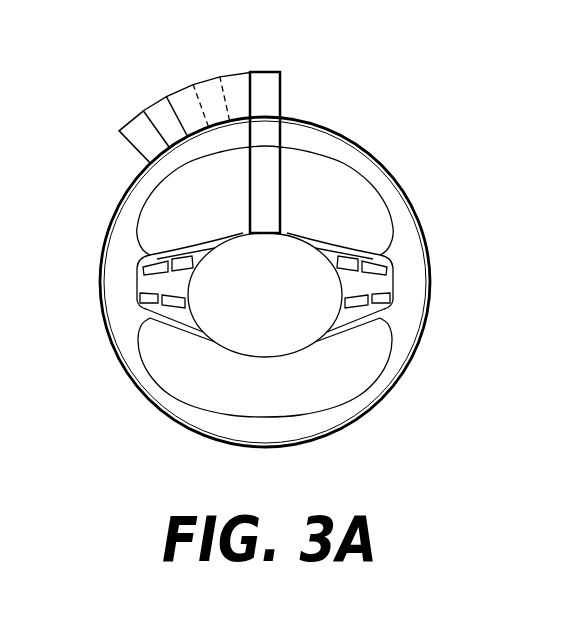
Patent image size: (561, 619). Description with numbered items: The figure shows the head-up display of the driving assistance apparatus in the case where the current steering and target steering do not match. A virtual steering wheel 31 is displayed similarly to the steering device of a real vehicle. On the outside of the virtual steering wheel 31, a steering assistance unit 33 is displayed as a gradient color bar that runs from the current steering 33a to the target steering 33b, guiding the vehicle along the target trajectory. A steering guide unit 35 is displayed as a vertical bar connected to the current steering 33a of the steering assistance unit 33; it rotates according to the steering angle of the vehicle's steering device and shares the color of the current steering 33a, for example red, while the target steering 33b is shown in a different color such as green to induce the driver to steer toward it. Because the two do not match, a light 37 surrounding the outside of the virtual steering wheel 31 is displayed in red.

The virtual steering wheel 31 is at (294, 262).
The steering assistance unit 33 is at (179, 123).
The current steering 33a is at (263, 70).
The target steering 33b is at (132, 144).
The steering guide unit 35 is at (280, 205).
The light 37 is at (347, 132).